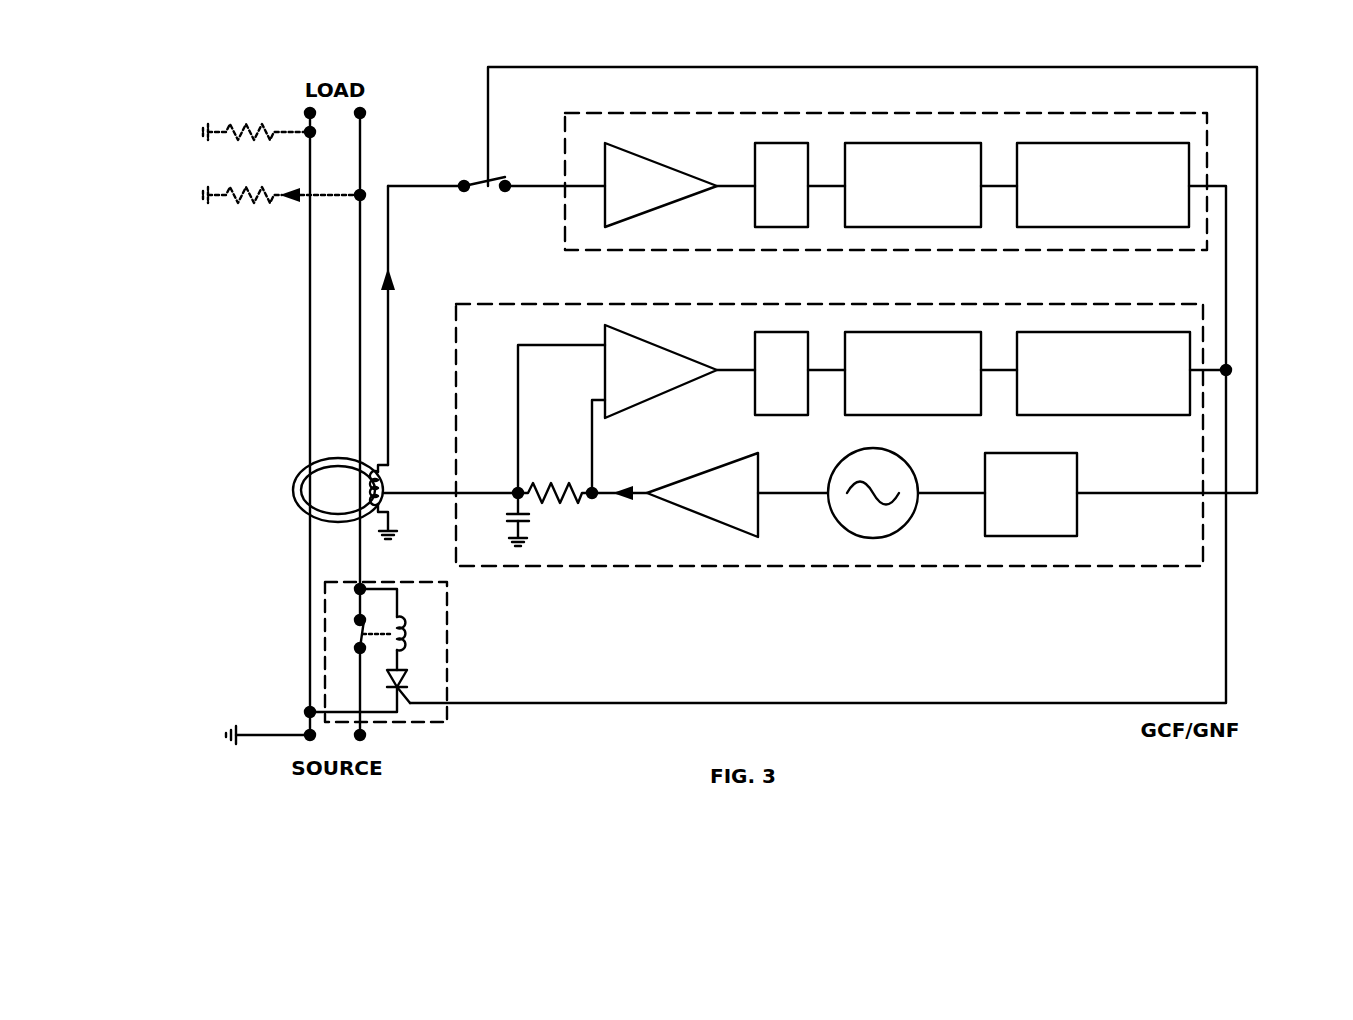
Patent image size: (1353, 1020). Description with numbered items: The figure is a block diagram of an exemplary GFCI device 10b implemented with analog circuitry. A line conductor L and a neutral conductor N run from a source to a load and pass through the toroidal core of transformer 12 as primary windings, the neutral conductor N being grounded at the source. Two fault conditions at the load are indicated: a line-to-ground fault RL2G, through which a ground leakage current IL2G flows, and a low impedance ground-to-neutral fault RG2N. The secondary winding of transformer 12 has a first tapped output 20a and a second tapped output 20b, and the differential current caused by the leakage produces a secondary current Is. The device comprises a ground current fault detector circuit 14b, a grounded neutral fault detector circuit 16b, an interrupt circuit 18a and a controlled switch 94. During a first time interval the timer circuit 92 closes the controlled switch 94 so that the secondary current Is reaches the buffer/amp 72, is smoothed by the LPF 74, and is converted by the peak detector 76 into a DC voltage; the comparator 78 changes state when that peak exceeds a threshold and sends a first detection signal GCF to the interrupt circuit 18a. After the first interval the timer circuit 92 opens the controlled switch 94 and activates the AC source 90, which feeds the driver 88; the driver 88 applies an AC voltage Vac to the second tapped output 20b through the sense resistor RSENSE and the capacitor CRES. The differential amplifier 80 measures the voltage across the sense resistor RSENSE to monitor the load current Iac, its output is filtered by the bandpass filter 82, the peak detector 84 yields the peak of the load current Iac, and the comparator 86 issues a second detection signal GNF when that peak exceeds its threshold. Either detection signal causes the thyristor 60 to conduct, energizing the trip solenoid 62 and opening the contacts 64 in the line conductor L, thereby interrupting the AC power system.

The GFCI device 10b is at (1280, 103).
The transformer 12 is at (298, 492).
The ground current fault detector circuit 14b is at (1150, 112).
The grounded neutral fault detector circuit 16b is at (1100, 303).
The interrupt circuit 18a is at (447, 632).
The first tapped output 20a is at (386, 480).
The second tapped output 20b is at (386, 506).
The thyristor 60 is at (405, 690).
The trip solenoid 62 is at (403, 618).
The contacts 64 is at (360, 634).
The buffer/amp 72 is at (652, 162).
The LPF 74 is at (782, 143).
The peak detector 76 is at (905, 143).
The comparator 78 is at (1100, 143).
The differential amplifier 80 is at (667, 349).
The bandpass filter 82 is at (753, 398).
The peak detector 84 is at (843, 398).
The comparator 86 is at (1015, 398).
The driver 88 is at (694, 478).
The AC source 90 is at (913, 470).
The timer circuit 92 is at (1077, 465).
The controlled switch 94 is at (483, 195).
The neutral conductor N is at (309, 346).
The line conductor L is at (360, 346).
The ground-to-neutral fault RG2N is at (244, 120).
The line-to-ground fault RL2G is at (244, 186).
The ground leakage current IL2G is at (287, 177).
The secondary current Is is at (397, 325).
The sense resistor RSENSE is at (555, 477).
The capacitor CRES is at (494, 519).
The AC voltage Vac is at (575, 527).
The load current Iac is at (619, 506).